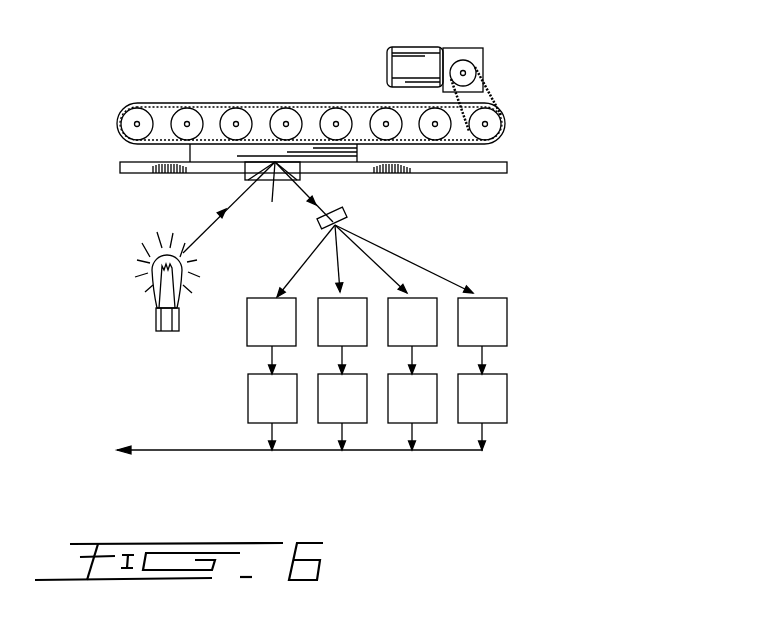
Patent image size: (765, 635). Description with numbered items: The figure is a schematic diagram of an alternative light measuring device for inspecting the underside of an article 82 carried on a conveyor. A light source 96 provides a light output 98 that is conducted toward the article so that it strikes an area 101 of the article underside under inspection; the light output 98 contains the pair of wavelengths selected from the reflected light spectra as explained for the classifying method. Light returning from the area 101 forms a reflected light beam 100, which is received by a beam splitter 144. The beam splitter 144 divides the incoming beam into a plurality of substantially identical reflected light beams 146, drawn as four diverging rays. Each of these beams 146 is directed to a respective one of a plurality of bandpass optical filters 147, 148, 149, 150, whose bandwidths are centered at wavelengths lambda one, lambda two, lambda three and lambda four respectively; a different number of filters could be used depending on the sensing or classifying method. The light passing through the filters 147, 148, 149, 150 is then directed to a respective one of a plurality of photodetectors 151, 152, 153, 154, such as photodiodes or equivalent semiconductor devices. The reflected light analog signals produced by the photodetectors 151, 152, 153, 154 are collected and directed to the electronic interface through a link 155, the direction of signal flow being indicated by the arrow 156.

The article 82 is at (260, 147).
The light source 96 is at (153, 302).
The light output 98 is at (203, 230).
The reflected light beam 100 is at (303, 190).
The area 101 is at (272, 202).
The beam splitter 144 is at (345, 215).
The reflected light beams 146 is at (322, 245).
The bandpass optical filter 147 is at (246, 318).
The bandpass optical filter 148 is at (318, 330).
The bandpass optical filter 149 is at (388, 330).
The bandpass optical filter 150 is at (507, 325).
The photodetector 151 is at (248, 403).
The photodetector 152 is at (357, 423).
The photodetector 153 is at (428, 423).
The photodetector 154 is at (507, 398).
The link 155 is at (185, 453).
The arrow 156 is at (125, 448).